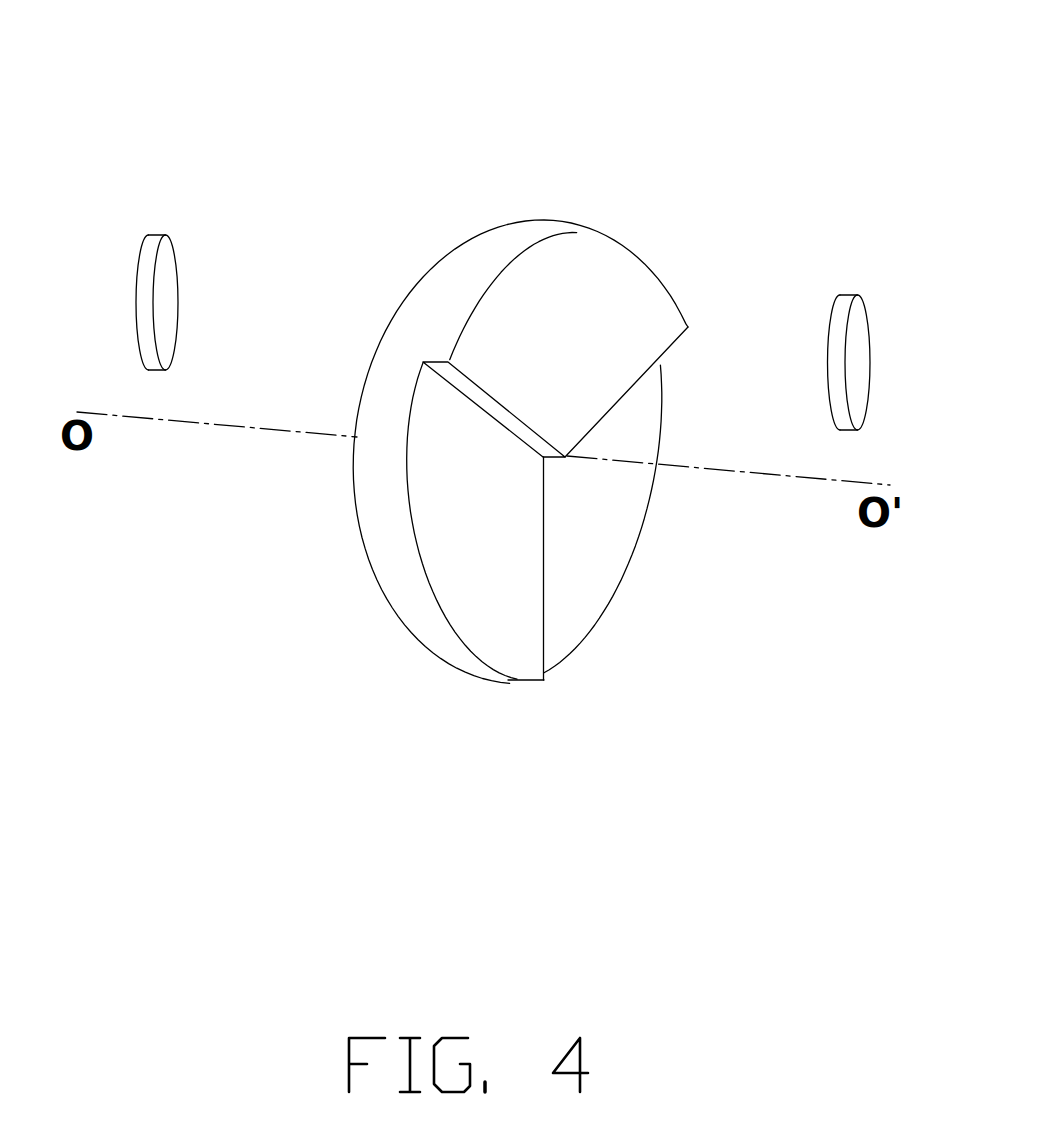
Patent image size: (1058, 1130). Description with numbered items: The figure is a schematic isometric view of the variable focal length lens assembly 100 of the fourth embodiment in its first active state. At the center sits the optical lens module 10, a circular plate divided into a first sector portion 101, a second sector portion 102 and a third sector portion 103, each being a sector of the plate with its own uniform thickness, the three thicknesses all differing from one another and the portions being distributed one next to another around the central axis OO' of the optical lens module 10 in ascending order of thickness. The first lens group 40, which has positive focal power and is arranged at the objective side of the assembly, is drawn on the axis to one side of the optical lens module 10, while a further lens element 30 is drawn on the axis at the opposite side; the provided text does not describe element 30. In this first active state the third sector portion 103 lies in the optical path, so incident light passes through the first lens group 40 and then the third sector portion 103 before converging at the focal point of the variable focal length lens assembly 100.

The variable focal length lens assembly 100 is at (488, 62).
The optical lens module 10 is at (556, 172).
The first sector portion 101 is at (602, 583).
The second sector portion 102 is at (487, 638).
The third sector portion 103 is at (667, 303).
The first lens 30 is at (158, 250).
The first lens group 40 is at (860, 317).